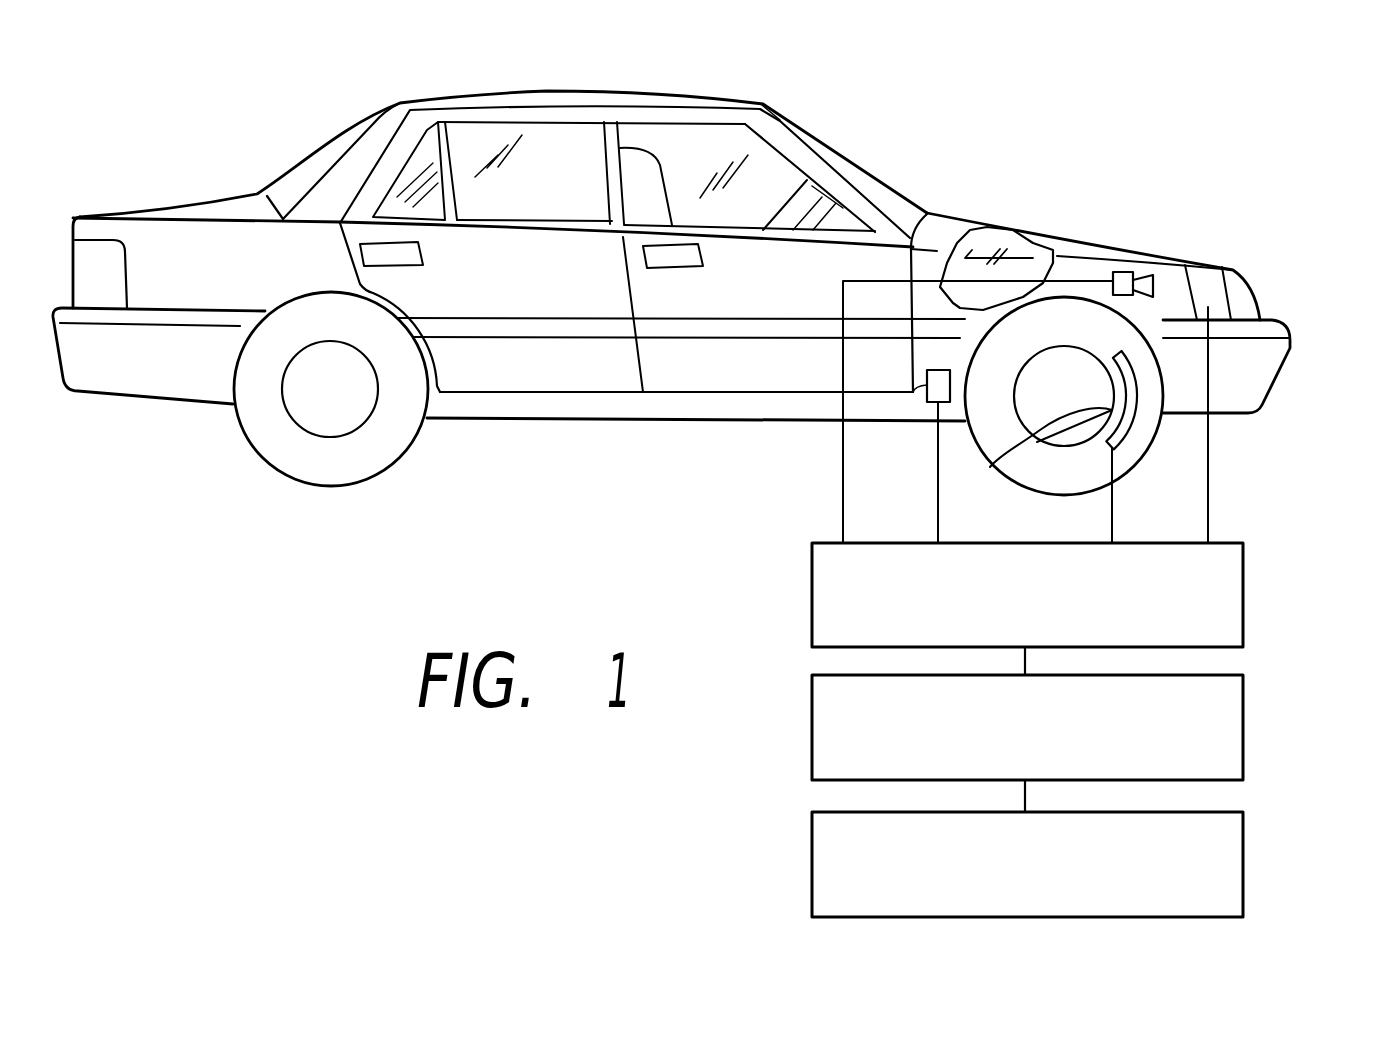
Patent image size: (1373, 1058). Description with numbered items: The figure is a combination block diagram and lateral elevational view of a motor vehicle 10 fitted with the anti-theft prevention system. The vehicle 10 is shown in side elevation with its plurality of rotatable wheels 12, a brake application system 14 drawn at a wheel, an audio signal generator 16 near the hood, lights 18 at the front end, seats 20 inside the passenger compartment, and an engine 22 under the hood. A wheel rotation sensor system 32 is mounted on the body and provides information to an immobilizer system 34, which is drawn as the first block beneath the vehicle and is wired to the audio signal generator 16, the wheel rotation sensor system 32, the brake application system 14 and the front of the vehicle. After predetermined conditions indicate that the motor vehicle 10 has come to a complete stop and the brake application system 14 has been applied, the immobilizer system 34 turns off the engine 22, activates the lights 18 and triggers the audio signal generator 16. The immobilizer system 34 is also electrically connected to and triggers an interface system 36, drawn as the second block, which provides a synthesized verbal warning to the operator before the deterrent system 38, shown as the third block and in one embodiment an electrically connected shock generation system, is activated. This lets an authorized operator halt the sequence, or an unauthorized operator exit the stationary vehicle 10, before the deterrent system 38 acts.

The motor vehicle 10 is at (146, 208).
The rotatable wheels 12 is at (1147, 455).
The brake application system 14 is at (990, 467).
The audio signal generator 16 is at (1140, 273).
The lights 18 is at (1256, 287).
The seats 20 is at (656, 145).
The engine 22 is at (1067, 250).
The wheel rotation sensor system 32 is at (921, 398).
The immobilizer system 34 is at (812, 590).
The interface system 36 is at (812, 740).
The deterrent system 38 is at (812, 873).